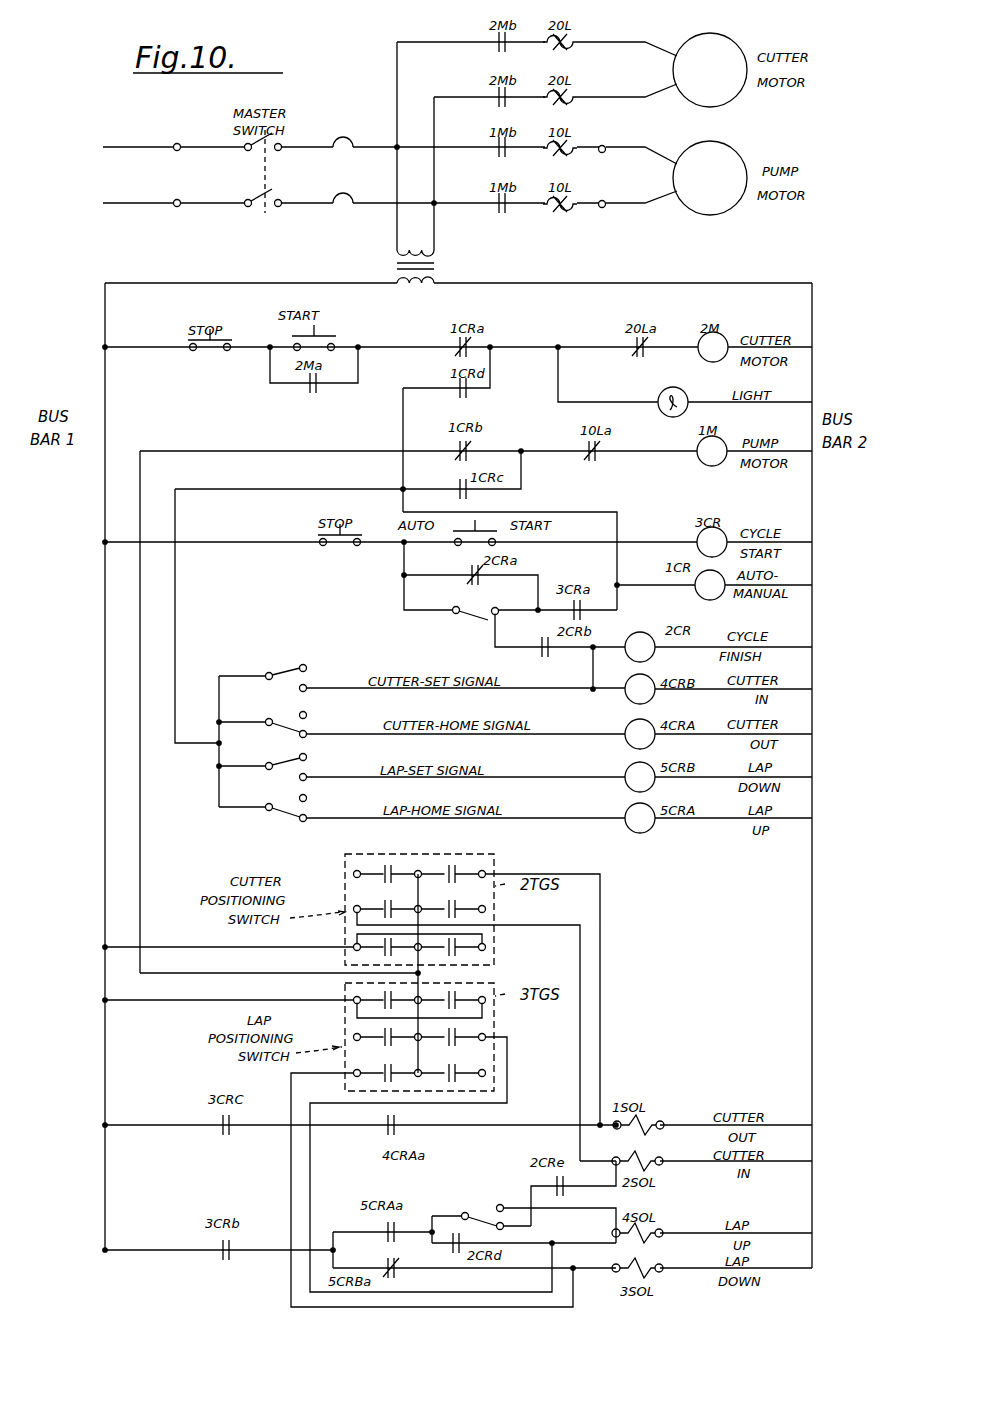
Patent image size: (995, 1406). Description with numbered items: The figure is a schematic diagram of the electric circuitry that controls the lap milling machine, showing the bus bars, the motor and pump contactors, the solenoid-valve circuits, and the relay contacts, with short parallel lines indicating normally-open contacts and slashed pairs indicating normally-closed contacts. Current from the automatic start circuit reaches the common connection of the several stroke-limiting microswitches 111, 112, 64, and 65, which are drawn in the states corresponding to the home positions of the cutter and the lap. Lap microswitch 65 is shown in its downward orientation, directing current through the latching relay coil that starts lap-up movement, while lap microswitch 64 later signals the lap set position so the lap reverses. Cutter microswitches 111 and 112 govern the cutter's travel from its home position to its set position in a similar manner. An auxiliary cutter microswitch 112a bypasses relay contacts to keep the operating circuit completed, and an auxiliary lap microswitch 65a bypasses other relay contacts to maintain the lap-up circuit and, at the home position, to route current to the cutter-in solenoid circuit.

The cutter microswitch 111 is at (300, 666).
The cutter microswitch 112 is at (306, 724).
The lap microswitch 64 is at (292, 749).
The lap microswitch 65 is at (306, 807).
The auxiliary cutter microswitch 112a is at (469, 619).
The auxiliary lap microswitch 65a is at (495, 1205).